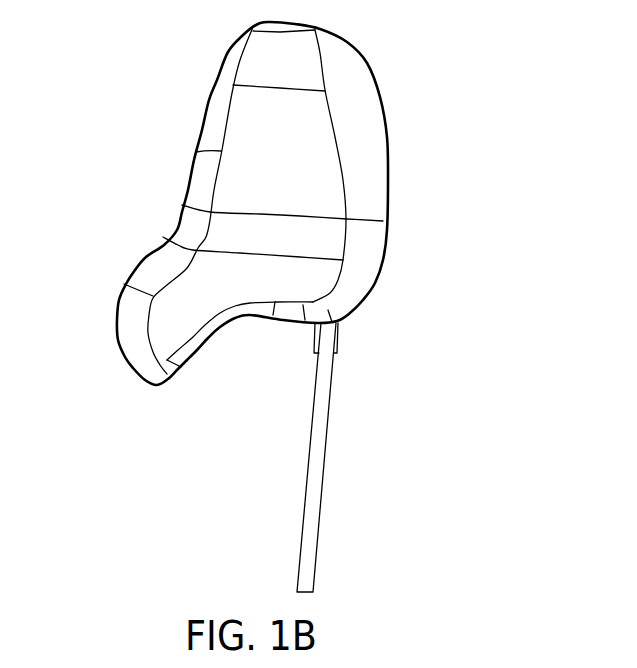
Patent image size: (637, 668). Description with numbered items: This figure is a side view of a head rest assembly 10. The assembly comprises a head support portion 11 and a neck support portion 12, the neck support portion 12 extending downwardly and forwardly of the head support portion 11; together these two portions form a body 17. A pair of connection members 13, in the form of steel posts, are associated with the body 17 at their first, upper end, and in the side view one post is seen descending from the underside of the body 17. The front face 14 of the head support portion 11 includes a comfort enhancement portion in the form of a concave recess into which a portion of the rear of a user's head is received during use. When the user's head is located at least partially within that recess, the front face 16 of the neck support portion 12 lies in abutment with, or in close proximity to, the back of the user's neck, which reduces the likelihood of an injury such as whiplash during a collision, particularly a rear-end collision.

The head rest assembly 10 is at (393, 92).
The head support portion 11 is at (297, 63).
The neck support portion 12 is at (142, 357).
The connection members 13 is at (320, 520).
The front face of the head support portion 14 is at (210, 98).
The front face of the neck support portion 16 is at (117, 330).
The body 17 is at (317, 243).